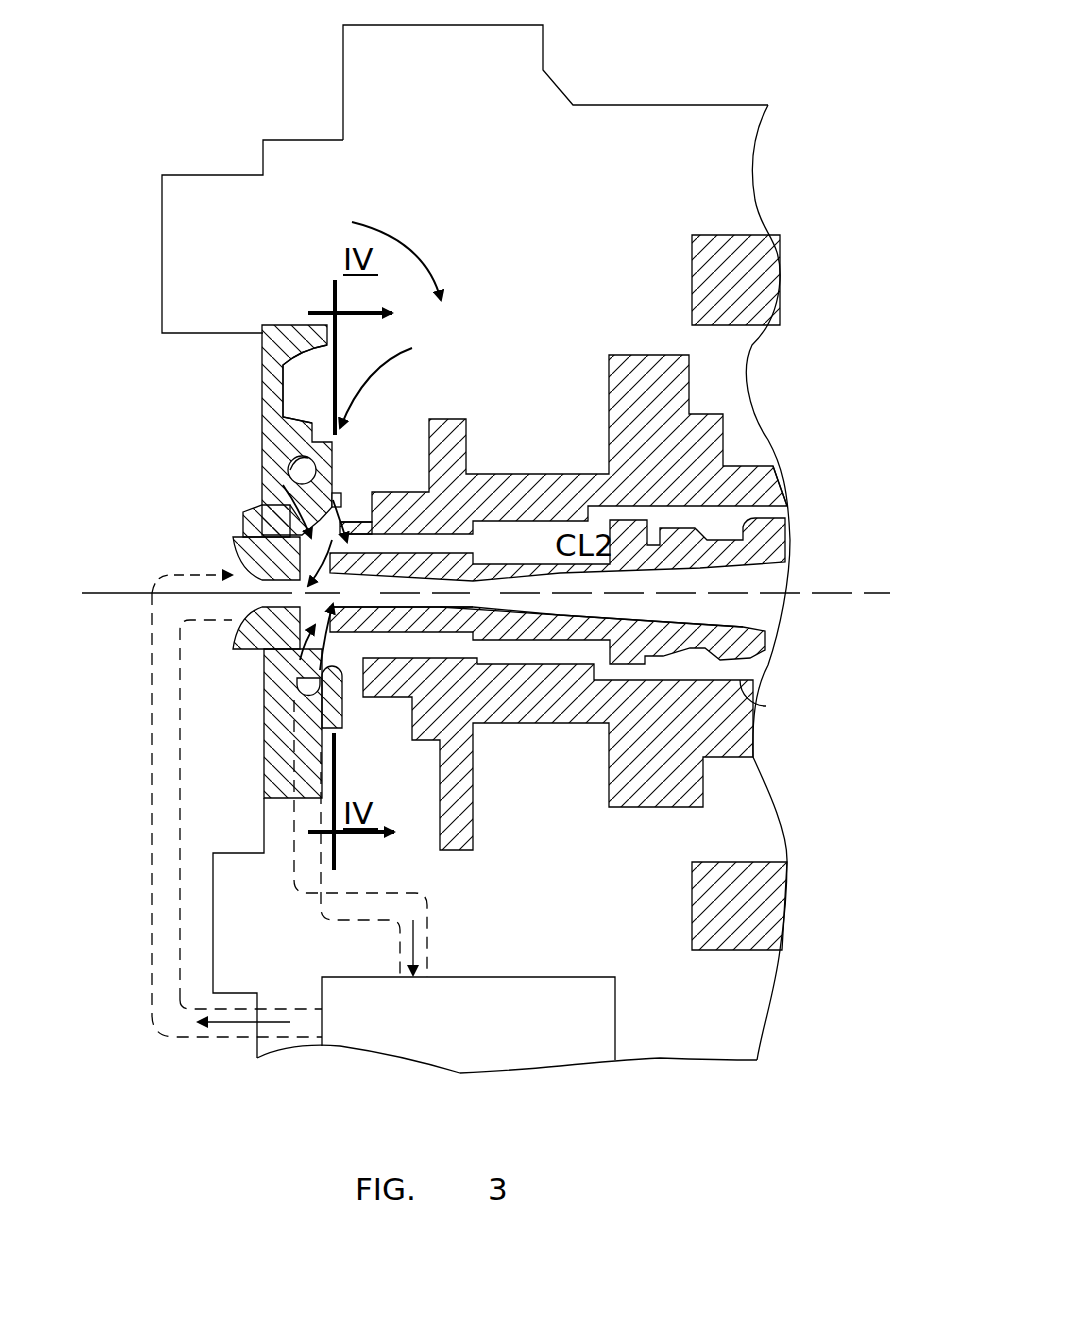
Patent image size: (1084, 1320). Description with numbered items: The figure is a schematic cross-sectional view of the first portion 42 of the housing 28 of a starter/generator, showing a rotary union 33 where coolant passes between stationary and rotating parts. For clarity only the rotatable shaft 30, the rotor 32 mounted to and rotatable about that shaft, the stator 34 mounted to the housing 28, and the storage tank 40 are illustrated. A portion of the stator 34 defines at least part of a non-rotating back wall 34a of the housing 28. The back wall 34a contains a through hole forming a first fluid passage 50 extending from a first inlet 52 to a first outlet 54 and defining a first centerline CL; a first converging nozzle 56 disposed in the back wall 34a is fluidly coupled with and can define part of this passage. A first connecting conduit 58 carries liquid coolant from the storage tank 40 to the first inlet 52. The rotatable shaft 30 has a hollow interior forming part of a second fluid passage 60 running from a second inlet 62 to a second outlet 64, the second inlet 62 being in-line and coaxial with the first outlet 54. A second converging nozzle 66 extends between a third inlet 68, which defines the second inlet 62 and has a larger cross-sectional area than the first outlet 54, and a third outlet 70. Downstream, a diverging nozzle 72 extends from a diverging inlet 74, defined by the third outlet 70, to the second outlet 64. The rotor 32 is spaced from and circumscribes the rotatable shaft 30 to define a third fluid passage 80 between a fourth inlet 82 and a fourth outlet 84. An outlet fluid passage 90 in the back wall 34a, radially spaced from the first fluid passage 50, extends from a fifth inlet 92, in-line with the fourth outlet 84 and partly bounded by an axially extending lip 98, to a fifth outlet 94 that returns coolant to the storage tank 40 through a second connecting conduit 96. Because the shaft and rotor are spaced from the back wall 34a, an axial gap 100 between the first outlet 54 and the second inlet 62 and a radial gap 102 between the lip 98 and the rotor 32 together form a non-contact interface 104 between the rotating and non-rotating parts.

The housing 28 is at (643, 105).
The rotatable shaft 30 is at (745, 682).
The rotor 32 is at (563, 439).
The rotary union 33 is at (397, 376).
The stator 34 is at (740, 276).
The back wall 34a is at (278, 432).
The storage tank 40 is at (560, 1040).
The first portion 42 is at (378, 251).
The first fluid passage 50 is at (236, 540).
The first inlet 52 is at (200, 575).
The first outlet 54 is at (243, 511).
The first converging nozzle 56 is at (263, 612).
The first connecting conduit 58 is at (160, 918).
The second fluid passage 60 is at (680, 577).
The second inlet 62 is at (384, 718).
The second outlet 64 is at (774, 622).
The second converging nozzle 66 is at (385, 608).
The third inlet 68 is at (330, 720).
The third outlet 70 is at (529, 631).
The diverging nozzle 72 is at (640, 636).
The diverging inlet 74 is at (473, 603).
The third fluid passage 80 is at (505, 535).
The fourth inlet 82 is at (792, 517).
The fourth outlet 84 is at (345, 492).
The outlet fluid passage 90 is at (300, 490).
The fifth inlet 92 is at (292, 505).
The fifth outlet 94 is at (303, 468).
The second connecting conduit 96 is at (330, 910).
The lip 98 is at (343, 470).
The axial gap 100 is at (265, 681).
The radial gap 102 is at (352, 515).
The non-contact interface 104 is at (300, 640).
The first centerline CL is at (85, 593).